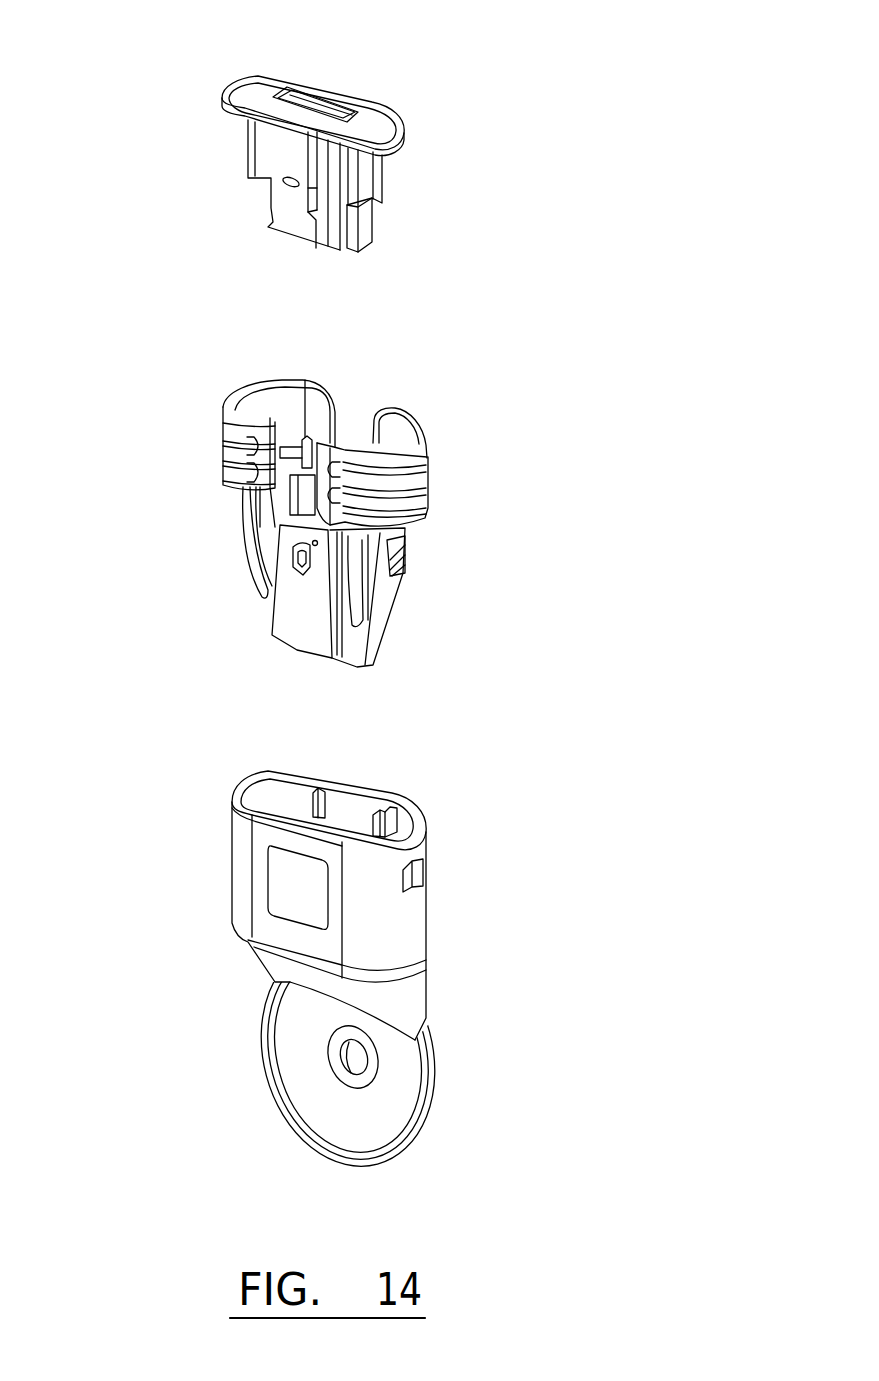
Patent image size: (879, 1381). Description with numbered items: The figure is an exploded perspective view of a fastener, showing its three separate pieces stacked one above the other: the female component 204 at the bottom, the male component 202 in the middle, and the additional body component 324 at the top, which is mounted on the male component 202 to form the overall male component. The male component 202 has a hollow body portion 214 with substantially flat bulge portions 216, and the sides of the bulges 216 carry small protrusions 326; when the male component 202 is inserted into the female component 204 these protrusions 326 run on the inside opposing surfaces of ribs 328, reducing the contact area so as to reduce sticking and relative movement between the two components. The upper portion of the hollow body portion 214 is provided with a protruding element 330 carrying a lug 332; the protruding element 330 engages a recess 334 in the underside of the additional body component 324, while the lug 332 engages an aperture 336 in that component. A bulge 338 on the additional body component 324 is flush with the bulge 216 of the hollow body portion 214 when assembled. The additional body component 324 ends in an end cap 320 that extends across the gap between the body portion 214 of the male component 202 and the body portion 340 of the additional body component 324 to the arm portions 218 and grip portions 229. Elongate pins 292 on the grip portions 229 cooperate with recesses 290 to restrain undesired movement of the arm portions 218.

The male component 202 is at (342, 525).
The female component 204 is at (422, 945).
The hollow body portion 214 is at (240, 583).
The bulge portion 216 is at (302, 615).
The arm portion 218 is at (400, 577).
The grip portion 229 is at (428, 430).
The recess 290 is at (312, 197).
The elongate pin 292 is at (309, 444).
The end cap 320 is at (373, 116).
The additional body component 324 is at (417, 138).
The protrusion 326 is at (395, 590).
The rib 328 is at (330, 802).
The protruding element 330 is at (307, 506).
The lug 332 is at (308, 470).
The recess 334 is at (320, 160).
The aperture 336 is at (283, 181).
The bulge 338 is at (287, 218).
The body portion 340 is at (393, 208).